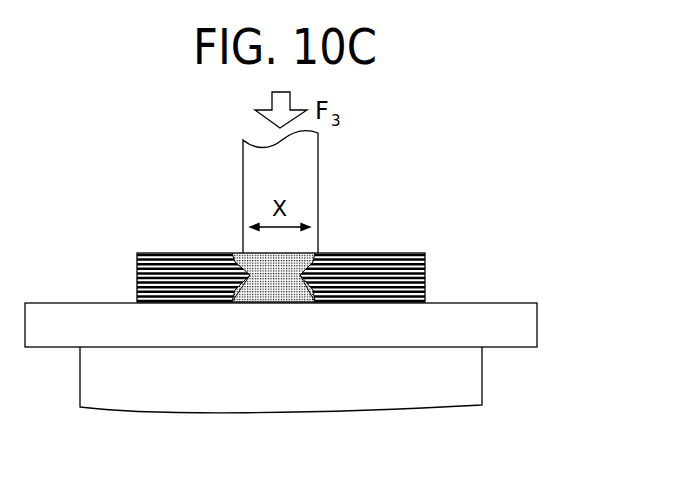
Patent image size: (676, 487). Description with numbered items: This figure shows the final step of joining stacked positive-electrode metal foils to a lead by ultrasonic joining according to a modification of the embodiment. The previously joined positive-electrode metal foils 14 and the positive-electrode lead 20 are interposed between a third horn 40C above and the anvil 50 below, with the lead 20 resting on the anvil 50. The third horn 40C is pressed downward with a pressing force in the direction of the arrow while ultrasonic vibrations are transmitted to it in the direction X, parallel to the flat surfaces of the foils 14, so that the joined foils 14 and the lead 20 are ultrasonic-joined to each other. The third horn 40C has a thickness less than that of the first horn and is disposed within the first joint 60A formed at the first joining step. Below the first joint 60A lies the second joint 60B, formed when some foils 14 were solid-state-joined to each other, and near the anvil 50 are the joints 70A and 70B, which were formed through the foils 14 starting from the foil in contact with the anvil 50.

The third horn 40C is at (319, 185).
The positive-electrode metal foil 14 is at (437, 253).
The first joint 60A is at (233, 254).
The second joint 60B is at (291, 266).
The positive-electrode lead 20 is at (538, 323).
The anvil 50 is at (483, 378).
The joint 70A is at (232, 310).
The joint 70B is at (285, 296).